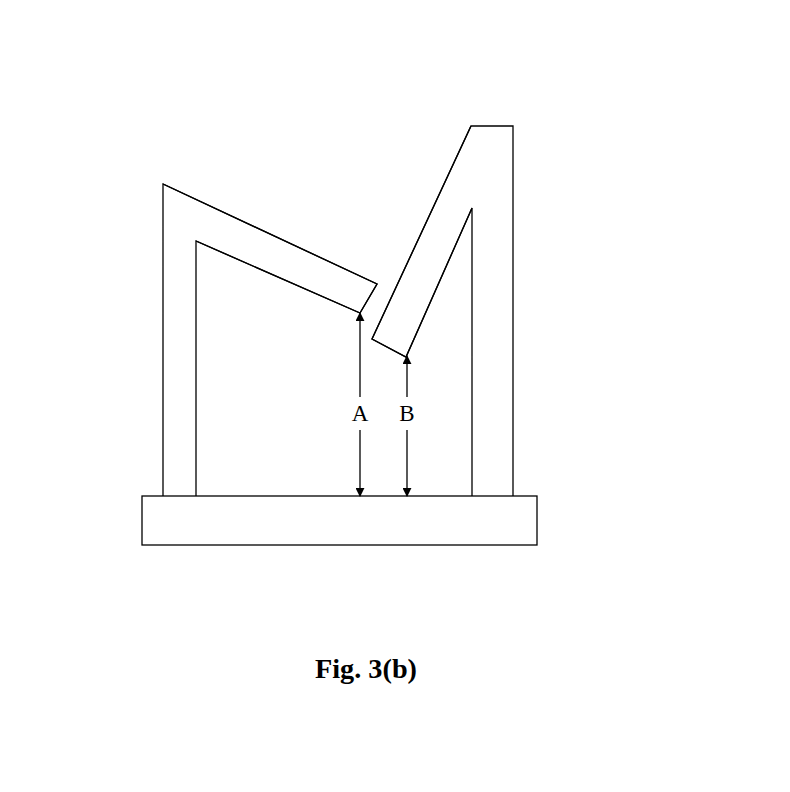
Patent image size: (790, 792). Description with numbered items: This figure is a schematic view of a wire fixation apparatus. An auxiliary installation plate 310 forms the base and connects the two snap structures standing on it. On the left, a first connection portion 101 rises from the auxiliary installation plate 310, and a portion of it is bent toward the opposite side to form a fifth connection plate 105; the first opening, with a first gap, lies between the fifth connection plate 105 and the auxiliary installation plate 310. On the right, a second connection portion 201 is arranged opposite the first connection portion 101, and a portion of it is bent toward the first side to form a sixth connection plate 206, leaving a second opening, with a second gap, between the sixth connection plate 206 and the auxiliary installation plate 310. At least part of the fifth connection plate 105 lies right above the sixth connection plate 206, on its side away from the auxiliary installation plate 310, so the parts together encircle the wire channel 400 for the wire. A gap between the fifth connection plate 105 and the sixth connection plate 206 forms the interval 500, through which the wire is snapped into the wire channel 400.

The first connection portion 101 is at (175, 332).
The fifth connection plate 105 is at (258, 248).
The second connection portion 201 is at (497, 365).
The sixth connection plate 206 is at (437, 241).
The auxiliary installation plate 310 is at (338, 520).
The wire channel 400 is at (438, 455).
The interval 500 is at (381, 297).